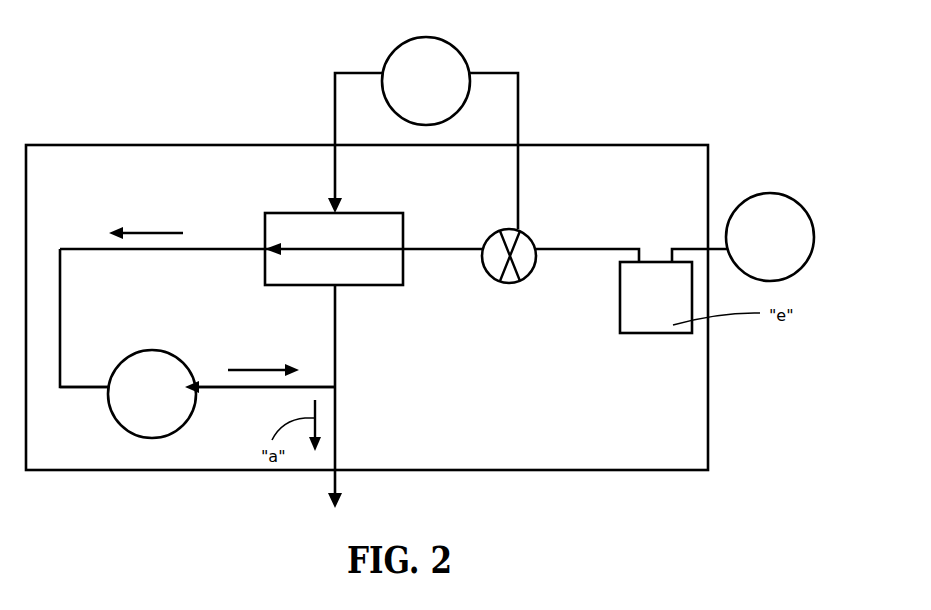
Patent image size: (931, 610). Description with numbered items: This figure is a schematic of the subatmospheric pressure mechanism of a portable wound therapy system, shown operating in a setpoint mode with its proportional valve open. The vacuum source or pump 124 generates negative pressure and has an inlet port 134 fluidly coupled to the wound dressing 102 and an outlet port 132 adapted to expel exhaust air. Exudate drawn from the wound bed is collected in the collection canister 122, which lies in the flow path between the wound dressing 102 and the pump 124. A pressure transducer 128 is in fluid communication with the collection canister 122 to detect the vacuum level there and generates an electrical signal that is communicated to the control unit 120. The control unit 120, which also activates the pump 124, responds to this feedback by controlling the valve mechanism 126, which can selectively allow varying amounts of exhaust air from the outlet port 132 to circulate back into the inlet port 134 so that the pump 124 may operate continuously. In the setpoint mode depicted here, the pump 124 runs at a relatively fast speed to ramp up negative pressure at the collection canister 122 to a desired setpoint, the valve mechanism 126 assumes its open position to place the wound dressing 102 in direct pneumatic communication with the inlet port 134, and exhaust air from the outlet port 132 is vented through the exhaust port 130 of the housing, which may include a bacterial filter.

The wound dressing 102 is at (782, 192).
The control unit 120 is at (453, 45).
The collection canister 122 is at (645, 335).
The vacuum source or pump 124 is at (125, 430).
The valve mechanism 126 is at (288, 212).
The pressure transducer 128 is at (528, 235).
The exhaust port 130 is at (337, 468).
The outlet port 132 is at (193, 384).
The inlet port 134 is at (108, 384).